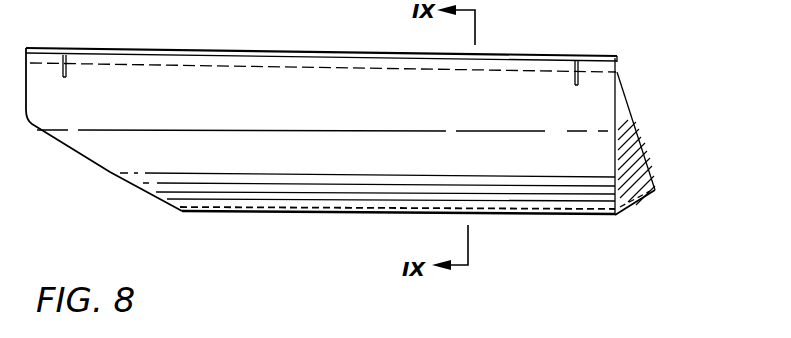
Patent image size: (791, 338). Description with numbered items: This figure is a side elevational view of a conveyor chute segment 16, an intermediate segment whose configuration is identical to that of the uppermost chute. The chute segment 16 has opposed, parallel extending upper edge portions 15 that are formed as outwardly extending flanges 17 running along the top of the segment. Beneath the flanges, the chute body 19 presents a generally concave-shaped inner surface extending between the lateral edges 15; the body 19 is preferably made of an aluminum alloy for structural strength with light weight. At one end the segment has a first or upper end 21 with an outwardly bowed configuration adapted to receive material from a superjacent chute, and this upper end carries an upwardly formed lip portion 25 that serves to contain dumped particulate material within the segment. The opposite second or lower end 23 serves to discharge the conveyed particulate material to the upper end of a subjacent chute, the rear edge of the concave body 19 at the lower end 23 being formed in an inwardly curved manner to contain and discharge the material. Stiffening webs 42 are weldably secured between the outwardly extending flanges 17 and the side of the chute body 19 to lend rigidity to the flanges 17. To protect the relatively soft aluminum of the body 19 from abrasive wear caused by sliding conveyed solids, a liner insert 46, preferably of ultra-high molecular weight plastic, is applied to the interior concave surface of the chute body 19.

The upper edge portions 15 is at (514, 55).
The chute segment 16 is at (302, 182).
The outwardly extending flanges 17 is at (191, 49).
The chute body 19 is at (334, 83).
The upper end 21 is at (648, 165).
The lower end 23 is at (112, 172).
The lip portion 25 is at (637, 205).
The stiffening webs 42 is at (67, 73).
The liner insert 46 is at (232, 64).